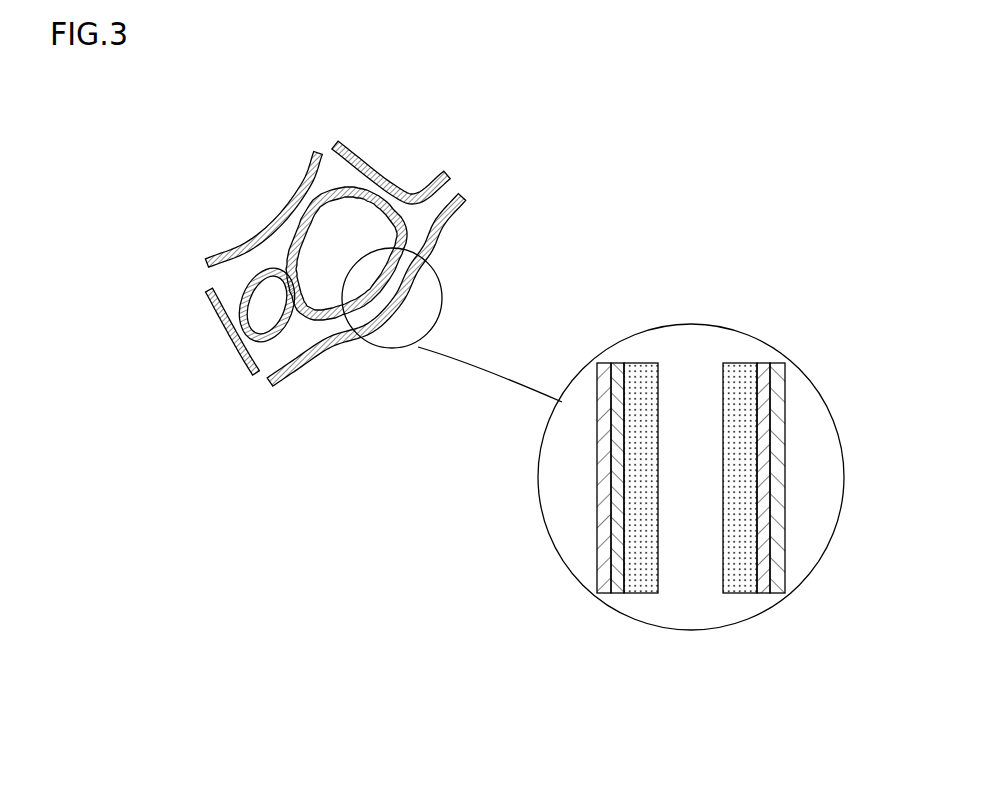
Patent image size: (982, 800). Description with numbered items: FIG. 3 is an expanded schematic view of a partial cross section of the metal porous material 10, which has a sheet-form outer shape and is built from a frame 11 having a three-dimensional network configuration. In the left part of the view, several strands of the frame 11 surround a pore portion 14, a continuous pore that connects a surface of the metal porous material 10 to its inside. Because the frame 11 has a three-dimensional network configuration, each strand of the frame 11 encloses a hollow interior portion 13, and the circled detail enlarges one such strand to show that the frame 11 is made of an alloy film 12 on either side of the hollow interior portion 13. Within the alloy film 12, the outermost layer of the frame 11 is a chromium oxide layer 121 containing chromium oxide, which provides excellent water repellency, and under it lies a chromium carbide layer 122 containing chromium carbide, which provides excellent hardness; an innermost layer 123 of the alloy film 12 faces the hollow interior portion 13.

The metal porous material 10 is at (688, 133).
The frame 11 is at (785, 317).
The alloy film 12 is at (438, 230).
The hollow interior portion 13 is at (218, 279).
The pore portion 14 is at (330, 235).
The chromium oxide layer 121 is at (605, 594).
The chromium carbide layer 122 is at (619, 594).
The third layer 123 is at (639, 594).